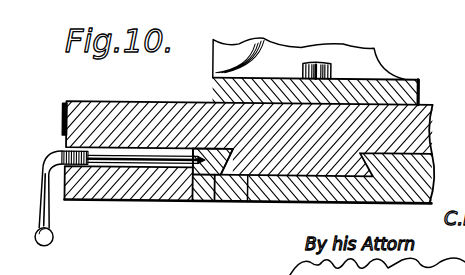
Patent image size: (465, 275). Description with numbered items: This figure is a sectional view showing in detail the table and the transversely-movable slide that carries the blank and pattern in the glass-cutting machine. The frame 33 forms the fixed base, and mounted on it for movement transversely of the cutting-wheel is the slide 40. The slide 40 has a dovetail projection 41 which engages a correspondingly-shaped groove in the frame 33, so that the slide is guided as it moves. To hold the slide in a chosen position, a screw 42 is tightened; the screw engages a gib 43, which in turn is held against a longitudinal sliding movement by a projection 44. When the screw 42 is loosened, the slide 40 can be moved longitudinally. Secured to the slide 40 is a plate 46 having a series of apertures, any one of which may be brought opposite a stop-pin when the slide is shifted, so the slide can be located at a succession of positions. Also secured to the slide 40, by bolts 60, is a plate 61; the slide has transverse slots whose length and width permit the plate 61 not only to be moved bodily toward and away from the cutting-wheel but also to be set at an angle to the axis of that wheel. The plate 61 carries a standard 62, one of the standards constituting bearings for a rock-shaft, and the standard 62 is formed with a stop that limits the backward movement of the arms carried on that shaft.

The slide 40 is at (137, 103).
The frame 33 is at (112, 192).
The plate 61 is at (403, 78).
The standard 62 is at (294, 53).
The bolt 60 is at (325, 62).
The plate 46 is at (62, 125).
The gib 43 is at (215, 202).
The projection 44 is at (193, 202).
The dovetail projection 41 is at (248, 202).
The screw 42 is at (160, 166).